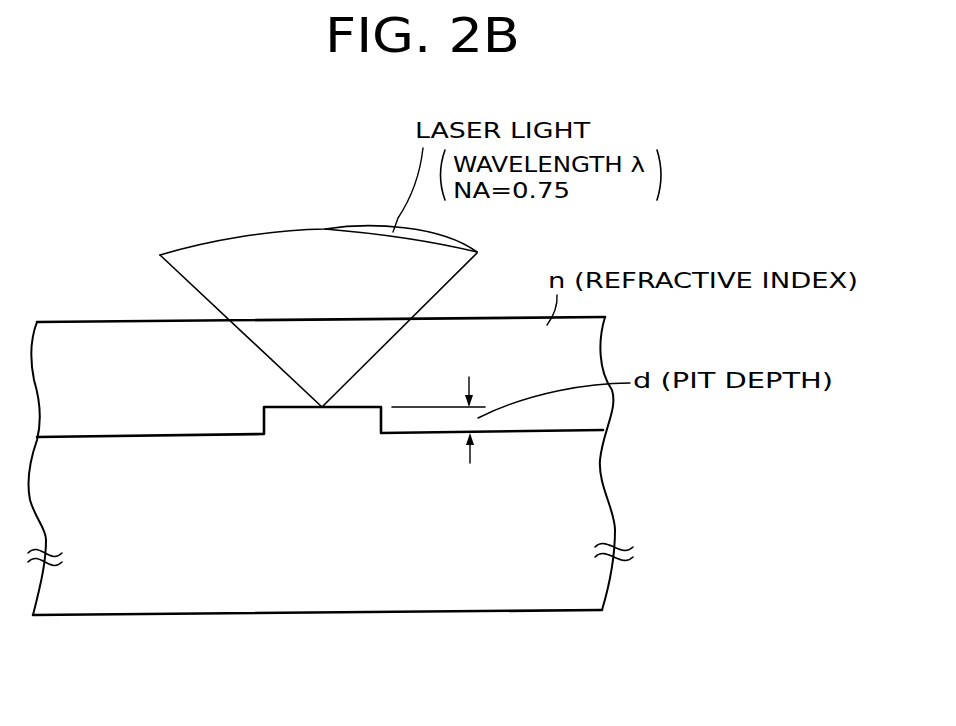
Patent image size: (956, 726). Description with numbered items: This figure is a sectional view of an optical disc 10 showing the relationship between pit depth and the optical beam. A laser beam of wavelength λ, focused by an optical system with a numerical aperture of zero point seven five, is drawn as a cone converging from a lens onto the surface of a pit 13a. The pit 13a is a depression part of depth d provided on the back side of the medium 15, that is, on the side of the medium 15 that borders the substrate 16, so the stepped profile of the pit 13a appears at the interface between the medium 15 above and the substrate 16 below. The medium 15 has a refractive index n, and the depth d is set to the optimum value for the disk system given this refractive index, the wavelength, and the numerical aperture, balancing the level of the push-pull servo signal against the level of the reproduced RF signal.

The optical disc 10 is at (312, 640).
The pit 13a is at (321, 420).
The medium 15 is at (98, 333).
The substrate 16 is at (577, 493).